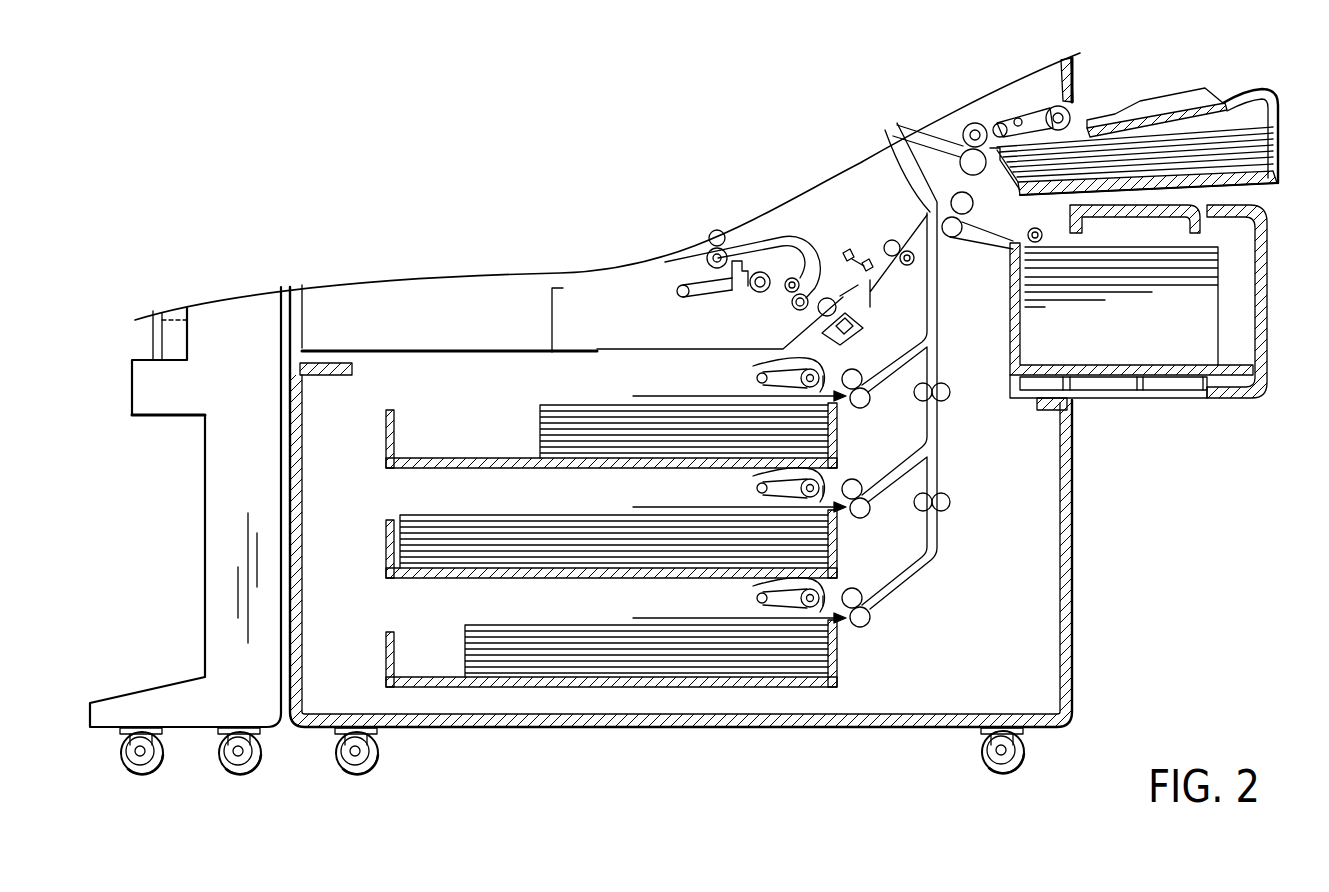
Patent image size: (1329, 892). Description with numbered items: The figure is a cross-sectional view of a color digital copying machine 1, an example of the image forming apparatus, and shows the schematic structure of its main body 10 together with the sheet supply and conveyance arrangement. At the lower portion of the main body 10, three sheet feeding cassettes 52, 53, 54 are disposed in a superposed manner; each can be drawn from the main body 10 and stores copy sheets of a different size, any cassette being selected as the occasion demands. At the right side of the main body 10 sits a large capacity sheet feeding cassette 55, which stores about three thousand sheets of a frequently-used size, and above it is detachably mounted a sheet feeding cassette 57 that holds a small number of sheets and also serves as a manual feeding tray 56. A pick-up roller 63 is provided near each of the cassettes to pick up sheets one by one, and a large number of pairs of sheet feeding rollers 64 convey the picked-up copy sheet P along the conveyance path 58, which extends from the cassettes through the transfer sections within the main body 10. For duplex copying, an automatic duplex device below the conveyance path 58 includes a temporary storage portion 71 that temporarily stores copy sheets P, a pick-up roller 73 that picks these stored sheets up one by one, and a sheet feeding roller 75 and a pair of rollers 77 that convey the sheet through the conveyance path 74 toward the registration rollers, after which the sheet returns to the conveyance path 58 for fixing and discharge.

The color digital copying machine 1 is at (1156, 505).
The main body 10 is at (1076, 556).
The sheet feeding cassette 52 is at (393, 441).
The sheet feeding cassette 53 is at (393, 548).
The sheet feeding cassette 54 is at (393, 660).
The large capacity sheet feeding cassette 55 is at (1170, 362).
The manual feeding tray 56 is at (1167, 118).
The sheet feeding cassette 57 is at (1262, 130).
The conveyance path 58 is at (922, 333).
The pick-up roller 63 is at (1090, 91).
The pairs of sheet feeding rollers 64 is at (866, 406).
The temporary storage portion 71 is at (627, 327).
The pick-up roller 73 is at (752, 295).
The conveyance path 74 is at (876, 261).
The sheet feeding roller 75 is at (818, 318).
The pair of rollers 77 is at (893, 240).
The copy sheet P is at (578, 417).